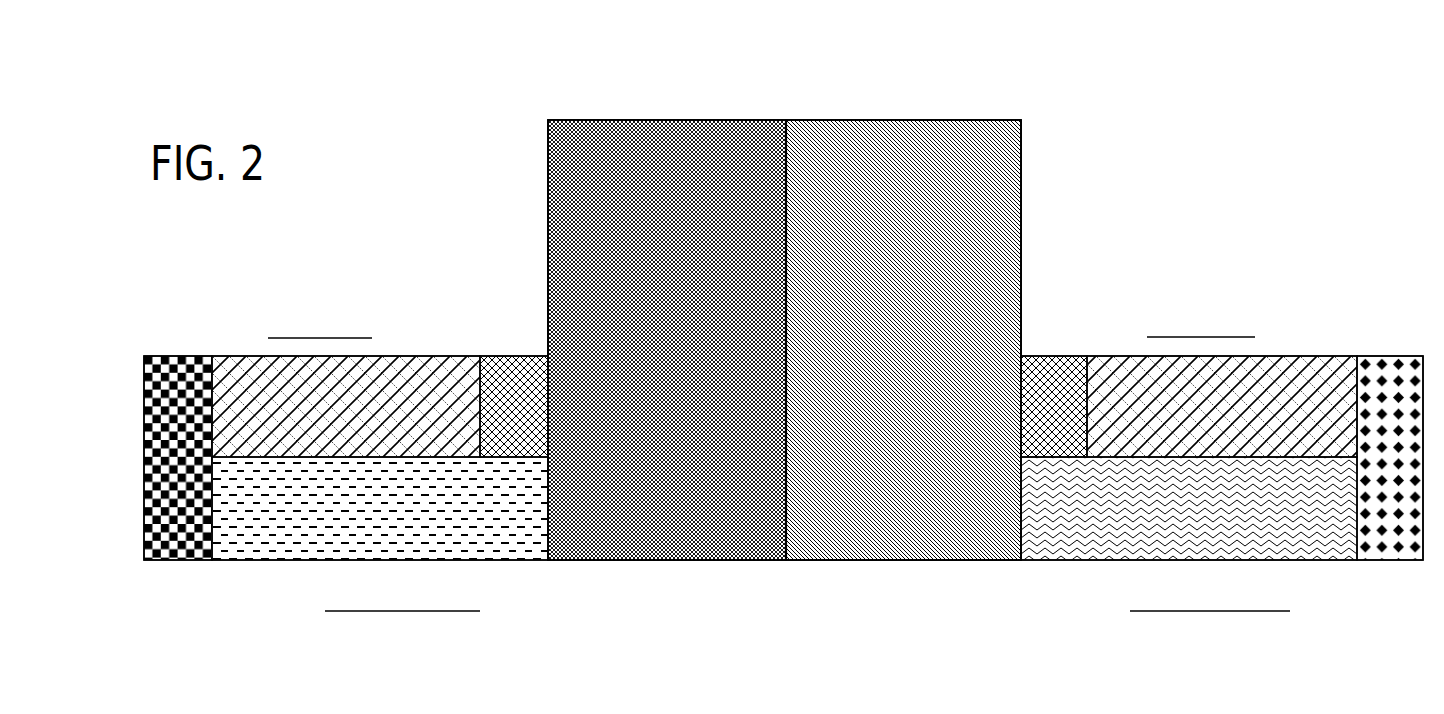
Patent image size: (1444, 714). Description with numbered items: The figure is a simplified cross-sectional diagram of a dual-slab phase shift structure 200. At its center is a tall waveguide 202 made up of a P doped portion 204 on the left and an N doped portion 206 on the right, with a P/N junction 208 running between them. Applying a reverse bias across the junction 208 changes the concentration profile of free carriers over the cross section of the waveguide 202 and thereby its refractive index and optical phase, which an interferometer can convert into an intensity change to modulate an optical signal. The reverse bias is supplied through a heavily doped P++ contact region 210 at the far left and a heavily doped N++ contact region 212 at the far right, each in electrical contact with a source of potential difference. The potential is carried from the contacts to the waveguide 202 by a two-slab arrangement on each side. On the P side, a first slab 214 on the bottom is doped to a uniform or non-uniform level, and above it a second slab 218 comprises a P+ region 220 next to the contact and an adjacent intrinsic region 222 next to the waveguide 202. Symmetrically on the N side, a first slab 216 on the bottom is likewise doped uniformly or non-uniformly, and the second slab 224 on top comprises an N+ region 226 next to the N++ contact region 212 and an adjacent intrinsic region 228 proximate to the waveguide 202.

The phase shift structure 200 is at (1372, 155).
The waveguide 202 is at (782, 383).
The P doped portion 204 is at (550, 179).
The N doped portion 206 is at (1000, 189).
The P/N junction 208 is at (787, 561).
The heavily doped P++ contact region 210 is at (197, 356).
The heavily doped N++ contact region 212 is at (1368, 356).
The first slab 214 is at (267, 545).
The first slab 216 is at (1064, 546).
The second slab 218 is at (380, 333).
The P+ region 220 is at (434, 356).
The intrinsic region 222 is at (498, 356).
The second slab 224 is at (1189, 336).
The N+ region 226 is at (1265, 356).
The intrinsic region 228 is at (1071, 356).